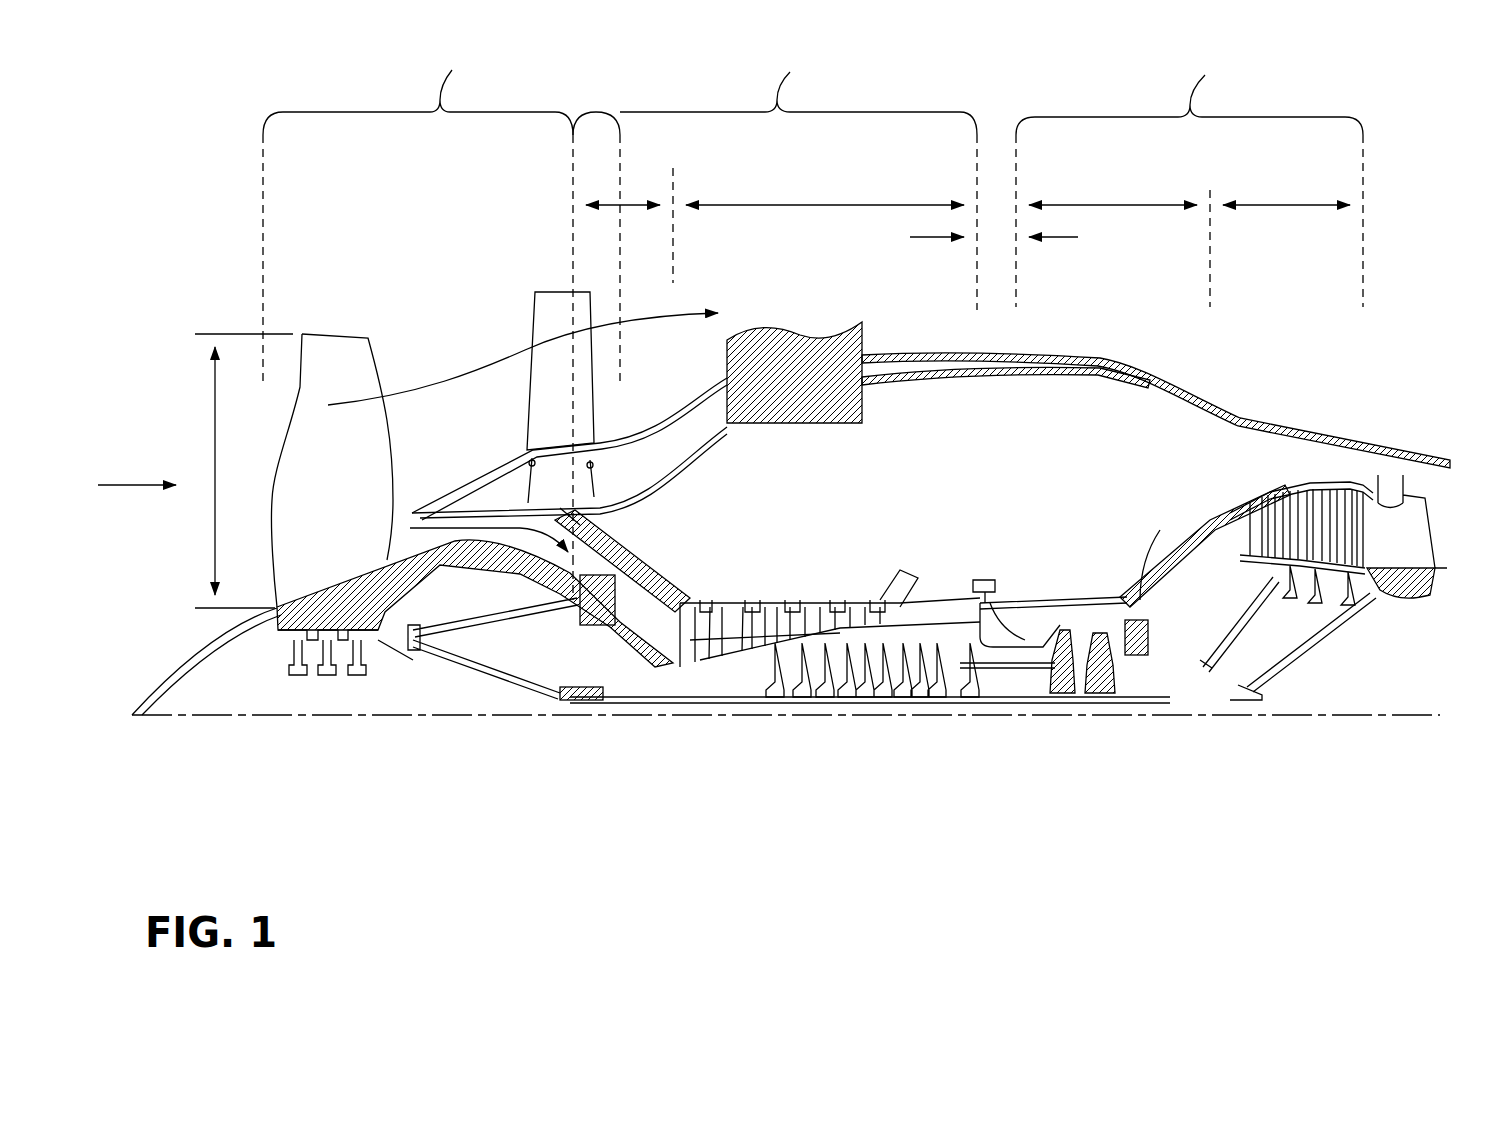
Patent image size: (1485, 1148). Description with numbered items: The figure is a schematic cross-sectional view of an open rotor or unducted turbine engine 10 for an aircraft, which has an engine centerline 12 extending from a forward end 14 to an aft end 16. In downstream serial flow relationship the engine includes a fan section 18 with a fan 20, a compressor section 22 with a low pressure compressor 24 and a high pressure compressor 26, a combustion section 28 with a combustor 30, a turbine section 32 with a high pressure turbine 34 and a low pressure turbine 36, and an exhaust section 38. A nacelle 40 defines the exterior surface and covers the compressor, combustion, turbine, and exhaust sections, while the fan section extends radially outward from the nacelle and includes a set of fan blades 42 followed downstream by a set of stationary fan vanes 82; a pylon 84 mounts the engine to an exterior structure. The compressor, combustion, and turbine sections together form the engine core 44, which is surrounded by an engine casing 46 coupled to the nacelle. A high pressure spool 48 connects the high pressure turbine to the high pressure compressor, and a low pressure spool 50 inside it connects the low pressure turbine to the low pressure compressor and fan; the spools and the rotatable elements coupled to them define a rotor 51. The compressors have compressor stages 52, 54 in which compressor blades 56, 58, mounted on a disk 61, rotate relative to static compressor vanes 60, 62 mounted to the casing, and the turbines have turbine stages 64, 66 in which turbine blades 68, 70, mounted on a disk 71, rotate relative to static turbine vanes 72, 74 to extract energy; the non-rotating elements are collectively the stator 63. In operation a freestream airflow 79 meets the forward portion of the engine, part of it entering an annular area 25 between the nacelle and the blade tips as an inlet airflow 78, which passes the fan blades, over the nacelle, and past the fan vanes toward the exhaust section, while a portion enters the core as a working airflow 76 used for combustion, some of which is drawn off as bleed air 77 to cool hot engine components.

The unducted turbine engine 10 is at (1382, 234).
The engine centerline 12 is at (258, 720).
The forward end 14 is at (167, 432).
The aft end 16 is at (1436, 537).
The fan section 18 is at (418, 305).
The fan 20 is at (398, 312).
The compressor section 22 is at (775, 223).
The low pressure (LP) compressor 24 is at (610, 205).
The annular area 25 is at (215, 470).
The high pressure (HP) compressor 26 is at (815, 205).
The combustion section 28 is at (928, 237).
The combustor 30 is at (1015, 611).
The turbine section 32 is at (1189, 183).
The HP turbine 34 is at (1115, 205).
The LP turbine 36 is at (1285, 205).
The exhaust section 38 is at (1428, 509).
The nacelle 40 is at (1240, 412).
The fan blades 42 is at (350, 382).
The engine core 44 is at (940, 488).
The engine casing 46 is at (1190, 530).
The HP spool 48 is at (985, 701).
The LP spool 50 is at (580, 701).
The rotor 51 is at (845, 705).
The compressor stages 52 is at (668, 533).
The compressor stages 54 is at (810, 597).
The compressor blades 56 is at (620, 577).
The compressor blades 58 is at (733, 615).
The static compressor vanes 60 is at (598, 560).
The disk 61 is at (470, 549).
The static compressor vanes 62 is at (715, 600).
The stator 63 is at (1263, 476).
The turbine stages 64 is at (1018, 545).
The turbine stages 66 is at (1290, 413).
The turbine blades 68 is at (1074, 610).
The turbine blades 70 is at (1352, 490).
The disk 71 is at (1265, 562).
The static turbine vanes 72 is at (1058, 610).
The static turbine vanes 74 is at (1337, 500).
The working airflow 76 is at (548, 541).
The bleed air 77 is at (842, 597).
The inlet airflow 78 is at (525, 350).
The freestream airflow 79 is at (153, 488).
The stationary fan vanes 82 is at (541, 388).
The pylon 84 is at (795, 318).